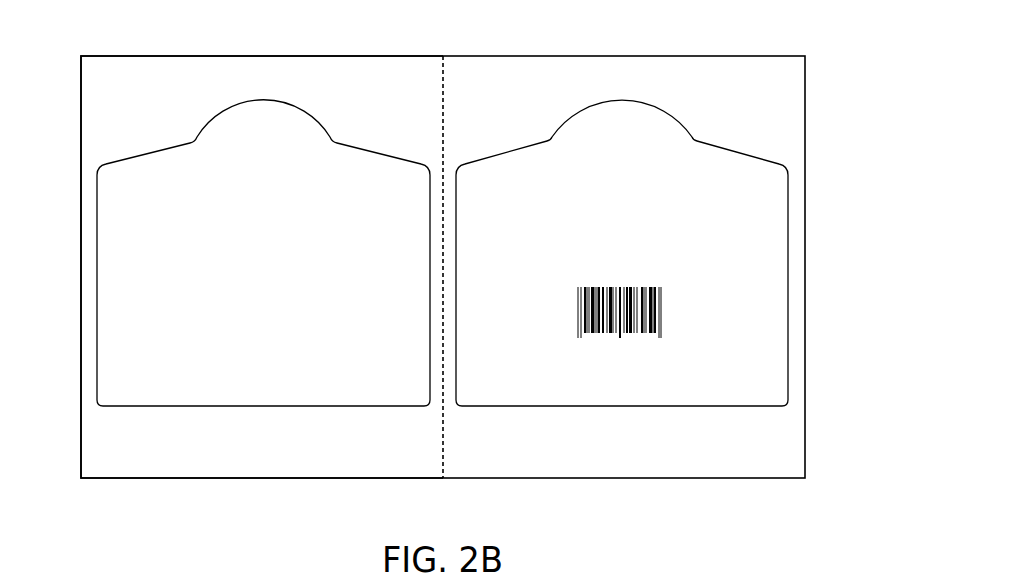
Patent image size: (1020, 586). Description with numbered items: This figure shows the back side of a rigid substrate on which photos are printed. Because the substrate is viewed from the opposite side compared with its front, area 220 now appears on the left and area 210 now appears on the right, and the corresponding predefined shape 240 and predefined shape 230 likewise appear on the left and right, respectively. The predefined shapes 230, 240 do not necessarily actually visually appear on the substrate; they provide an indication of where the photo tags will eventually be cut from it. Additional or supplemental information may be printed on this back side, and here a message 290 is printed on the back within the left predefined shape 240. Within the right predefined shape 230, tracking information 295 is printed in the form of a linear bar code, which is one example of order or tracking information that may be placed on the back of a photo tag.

The area 210 is at (505, 447).
The area 220 is at (383, 444).
The predefined shape 230 is at (727, 412).
The predefined shape 240 is at (120, 412).
The message 290 is at (356, 190).
The tracking information 295 is at (622, 348).